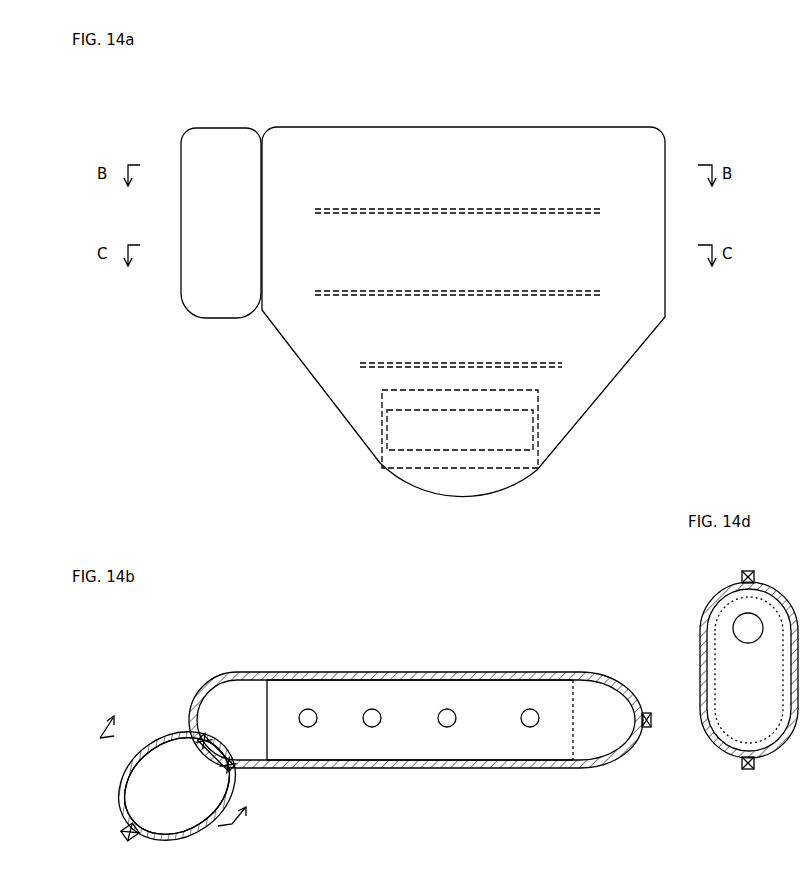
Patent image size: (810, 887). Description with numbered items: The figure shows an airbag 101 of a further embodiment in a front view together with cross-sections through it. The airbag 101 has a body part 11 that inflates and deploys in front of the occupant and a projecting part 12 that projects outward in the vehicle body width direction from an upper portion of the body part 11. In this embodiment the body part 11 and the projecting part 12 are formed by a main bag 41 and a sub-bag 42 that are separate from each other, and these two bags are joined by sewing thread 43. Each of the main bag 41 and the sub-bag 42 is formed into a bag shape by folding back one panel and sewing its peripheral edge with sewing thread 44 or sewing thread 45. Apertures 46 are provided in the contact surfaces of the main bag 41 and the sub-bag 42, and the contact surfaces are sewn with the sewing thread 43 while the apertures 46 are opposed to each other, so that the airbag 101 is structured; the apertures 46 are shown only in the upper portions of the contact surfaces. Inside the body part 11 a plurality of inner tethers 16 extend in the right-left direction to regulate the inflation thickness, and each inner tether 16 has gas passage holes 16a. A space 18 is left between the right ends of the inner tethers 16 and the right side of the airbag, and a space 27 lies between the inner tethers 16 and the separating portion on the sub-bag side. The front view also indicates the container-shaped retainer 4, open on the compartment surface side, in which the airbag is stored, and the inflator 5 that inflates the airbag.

In FIG. 14a, the airbag 101 is at (493, 110).
In FIG. 14b, the airbag 101 is at (437, 662).
In FIG. 14a, the main bag 41 is at (346, 120).
In FIG. 14b, the main bag 41 is at (346, 664).
In FIG. 14a, the sub-bag 42 is at (222, 120).
In FIG. 14b, the sub-bag 42 is at (120, 790).
In FIG. 14d, the sub-bag 42 is at (749, 670).
In FIG. 14a, the body part 11 is at (585, 130).
In FIG. 14b, the body part 11 is at (384, 770).
In FIG. 14a, the projecting part 12 is at (213, 295).
In FIG. 14b, the projecting part 12 is at (201, 832).
In FIG. 14a, the inner tethers 16 is at (470, 207).
In FIG. 14b, the inner tethers 16 is at (487, 697).
In FIG. 14b, the gas passage holes 16a is at (372, 728).
In FIG. 14b, the space 18 is at (600, 700).
In FIG. 14b, the space 27 is at (235, 700).
In FIG. 14a, the retainer 4 is at (493, 468).
In FIG. 14a, the inflator 5 is at (418, 435).
In FIG. 14b, the sewing thread 43 is at (188, 750).
In FIG. 14d, the sewing thread 43 is at (722, 712).
In FIG. 14b, the sewing thread 44 is at (646, 732).
In FIG. 14b, the sewing thread 45 is at (132, 840).
In FIG. 14d, the sewing thread 45 is at (740, 578).
In FIG. 14b, the apertures 46 is at (220, 750).
In FIG. 14d, the apertures 46 is at (748, 638).